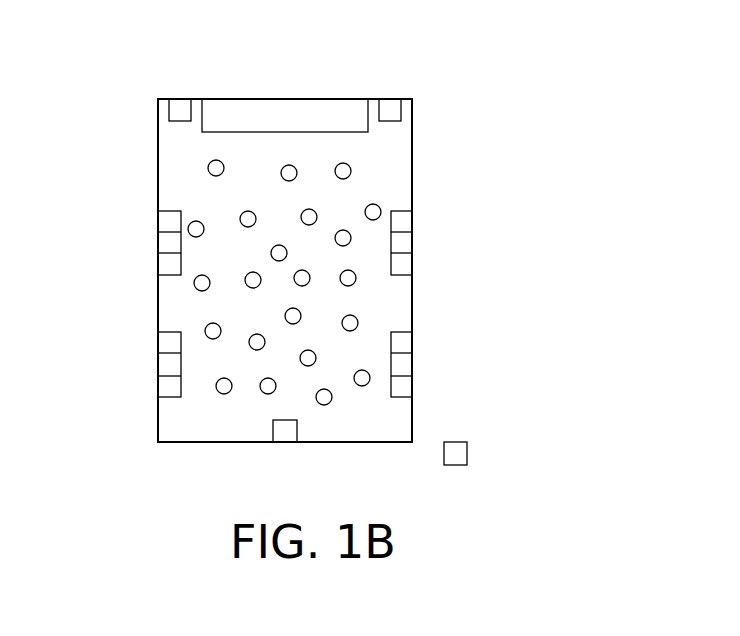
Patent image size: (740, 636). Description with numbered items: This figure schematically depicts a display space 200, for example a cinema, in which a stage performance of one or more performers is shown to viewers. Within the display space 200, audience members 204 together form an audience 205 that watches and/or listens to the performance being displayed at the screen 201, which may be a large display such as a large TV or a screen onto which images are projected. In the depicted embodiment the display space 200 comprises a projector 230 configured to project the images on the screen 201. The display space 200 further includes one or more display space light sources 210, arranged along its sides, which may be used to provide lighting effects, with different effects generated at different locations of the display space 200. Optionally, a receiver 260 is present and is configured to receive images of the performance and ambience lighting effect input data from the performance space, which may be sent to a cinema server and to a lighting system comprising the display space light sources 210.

The display space 200 is at (506, 91).
The screen 201 is at (285, 117).
The audience members 204 is at (208, 169).
The audience 205 is at (364, 301).
The display space light source 210 is at (182, 107).
The projector 230 is at (287, 433).
The receiver 260 is at (458, 451).